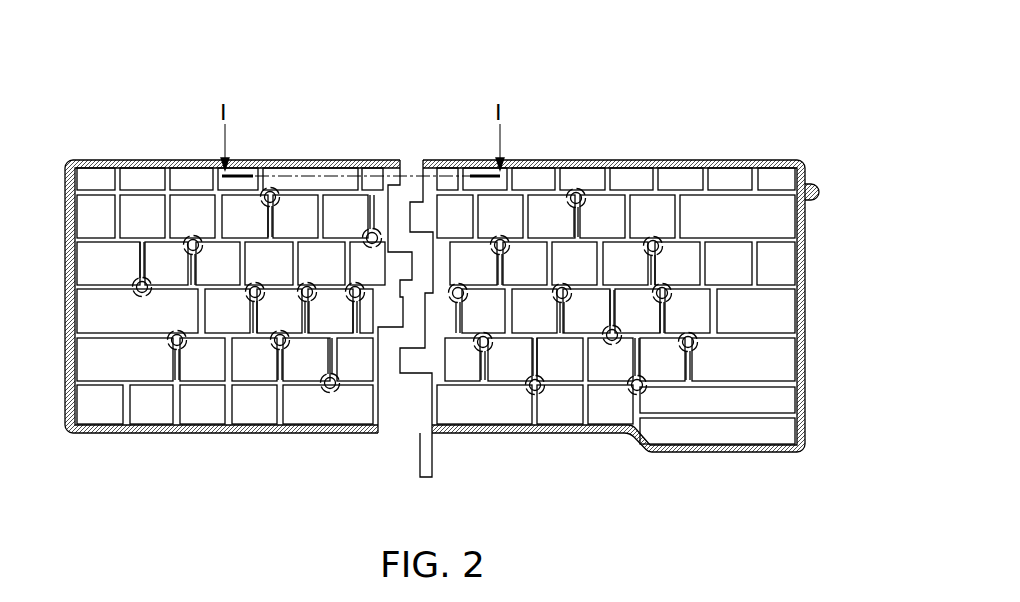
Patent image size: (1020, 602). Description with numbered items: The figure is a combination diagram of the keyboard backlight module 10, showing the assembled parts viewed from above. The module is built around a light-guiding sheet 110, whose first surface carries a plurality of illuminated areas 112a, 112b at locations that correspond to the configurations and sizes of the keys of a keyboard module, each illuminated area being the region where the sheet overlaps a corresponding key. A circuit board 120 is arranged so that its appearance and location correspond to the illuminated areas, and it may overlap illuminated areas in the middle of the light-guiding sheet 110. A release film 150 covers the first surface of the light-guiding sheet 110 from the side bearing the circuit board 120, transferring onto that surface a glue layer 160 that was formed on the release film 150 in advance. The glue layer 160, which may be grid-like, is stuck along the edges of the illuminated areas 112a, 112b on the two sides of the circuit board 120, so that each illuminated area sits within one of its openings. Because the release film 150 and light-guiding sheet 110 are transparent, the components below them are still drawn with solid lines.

The keyboard backlight module 10 is at (856, 64).
The light-guiding sheet 110 is at (421, 298).
The illuminated area 112a is at (502, 413).
The illuminated area 112b is at (94, 215).
The circuit board 120 is at (427, 460).
The release film 150 is at (812, 183).
The glue layer 160 is at (607, 183).